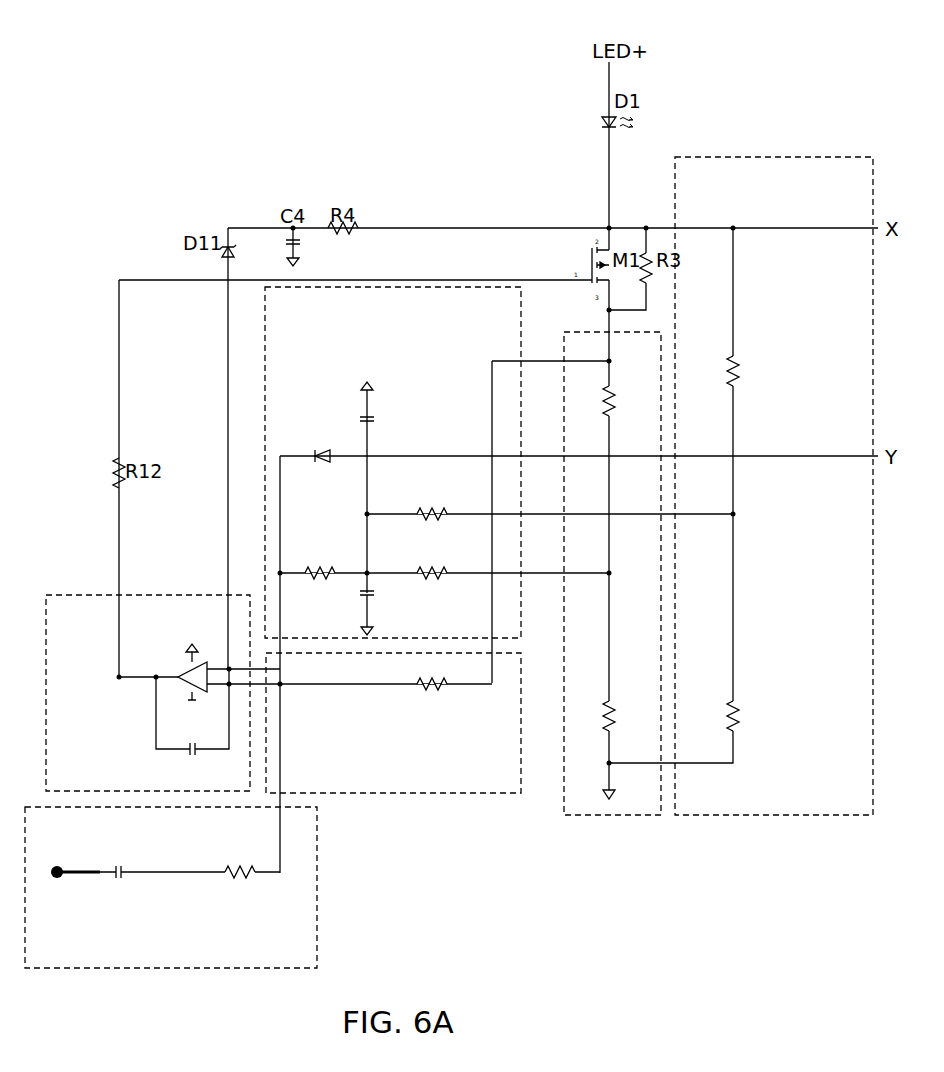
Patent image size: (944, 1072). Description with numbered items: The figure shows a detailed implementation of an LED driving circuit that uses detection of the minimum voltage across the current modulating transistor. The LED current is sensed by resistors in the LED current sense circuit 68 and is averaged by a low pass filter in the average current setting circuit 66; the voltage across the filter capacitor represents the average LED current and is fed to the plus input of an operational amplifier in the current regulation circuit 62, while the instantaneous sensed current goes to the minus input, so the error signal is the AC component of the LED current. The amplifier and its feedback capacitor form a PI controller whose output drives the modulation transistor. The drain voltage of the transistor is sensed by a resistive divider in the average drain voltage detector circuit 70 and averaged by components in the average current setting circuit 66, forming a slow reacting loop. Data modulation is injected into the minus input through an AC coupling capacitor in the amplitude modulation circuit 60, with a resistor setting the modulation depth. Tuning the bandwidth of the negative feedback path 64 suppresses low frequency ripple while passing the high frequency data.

The amplitude modulation circuit 60 is at (135, 969).
The current regulation circuit 62 is at (82, 594).
The negative feedback path 64 is at (425, 794).
The average current setting circuit 66 is at (450, 286).
The LED current sense circuit 68 is at (635, 816).
The average drain voltage detector circuit 70 is at (765, 157).